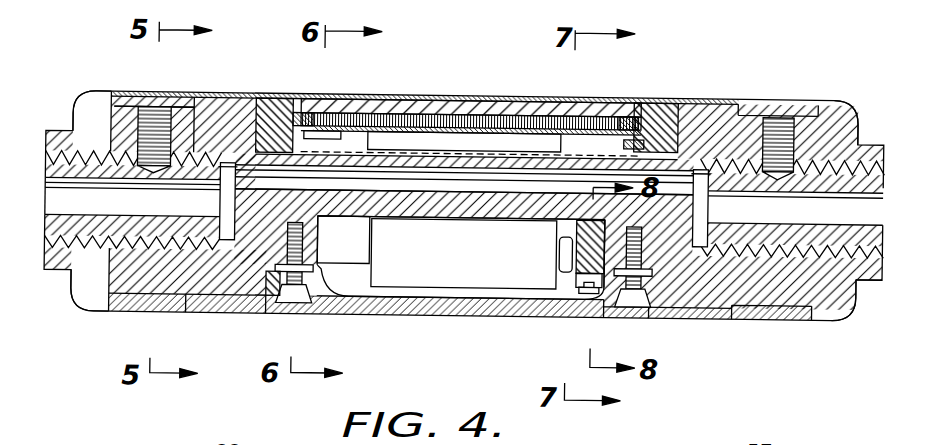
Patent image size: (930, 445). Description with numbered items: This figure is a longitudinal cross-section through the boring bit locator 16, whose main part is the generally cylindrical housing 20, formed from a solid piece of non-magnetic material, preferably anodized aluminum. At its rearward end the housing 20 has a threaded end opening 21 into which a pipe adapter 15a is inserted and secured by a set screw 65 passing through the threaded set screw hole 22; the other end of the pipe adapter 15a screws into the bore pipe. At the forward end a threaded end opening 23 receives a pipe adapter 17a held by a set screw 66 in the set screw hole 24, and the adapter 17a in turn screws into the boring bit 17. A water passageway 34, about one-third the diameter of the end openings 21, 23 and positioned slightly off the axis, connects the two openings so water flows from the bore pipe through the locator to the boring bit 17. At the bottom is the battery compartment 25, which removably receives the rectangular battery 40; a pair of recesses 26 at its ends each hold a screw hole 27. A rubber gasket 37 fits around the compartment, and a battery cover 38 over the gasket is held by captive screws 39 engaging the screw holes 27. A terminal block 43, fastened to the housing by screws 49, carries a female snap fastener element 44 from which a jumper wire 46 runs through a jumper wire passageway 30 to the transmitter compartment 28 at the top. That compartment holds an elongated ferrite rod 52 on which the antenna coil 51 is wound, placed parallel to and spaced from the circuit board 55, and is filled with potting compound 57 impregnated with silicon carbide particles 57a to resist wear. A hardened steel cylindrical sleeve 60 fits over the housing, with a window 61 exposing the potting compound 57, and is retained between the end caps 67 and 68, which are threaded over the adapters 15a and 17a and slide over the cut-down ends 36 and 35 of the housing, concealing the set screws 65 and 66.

The pipe adapter 15a is at (873, 287).
The boring bit locator 16 is at (460, 50).
The boring bit 17 is at (50, 272).
The pipe adapter 17a is at (113, 300).
The housing 20 is at (710, 300).
The threaded end opening 21 is at (757, 300).
The threaded set screw hole 22 is at (782, 109).
The threaded end opening 23 is at (160, 300).
The threaded set screw hole 24 is at (143, 106).
The battery compartment 25 is at (455, 216).
The recesses 26 is at (240, 300).
The screw hole 27 is at (288, 236).
The transmitter compartment 28 is at (663, 96).
The jumper wire passageway 30 is at (593, 182).
The water passageway 34 is at (373, 189).
The cut-down end / end cap recess 35 is at (128, 96).
The end cap recess 36 is at (797, 312).
The rubber gasket 37 is at (358, 262).
The battery cover 38 is at (472, 303).
The captive screws 39 is at (288, 303).
The battery 40 is at (464, 254).
The terminal block 43 is at (580, 276).
The female snap fastener element 44 is at (562, 253).
The jumper wire 46 is at (560, 227).
The screws 49 is at (584, 287).
The coil 51 is at (481, 110).
The ferrite rod 52 is at (620, 110).
The circuit board 55 is at (293, 145).
The potting compound 57 is at (395, 97).
The silicon carbide particles 57a is at (327, 96).
The cylindrical sleeve 60 is at (234, 92).
The window 61 is at (533, 91).
The set screw 65 is at (787, 91).
The set screw 66 is at (160, 107).
The end cap 67 is at (840, 312).
The end cap 68 is at (90, 305).